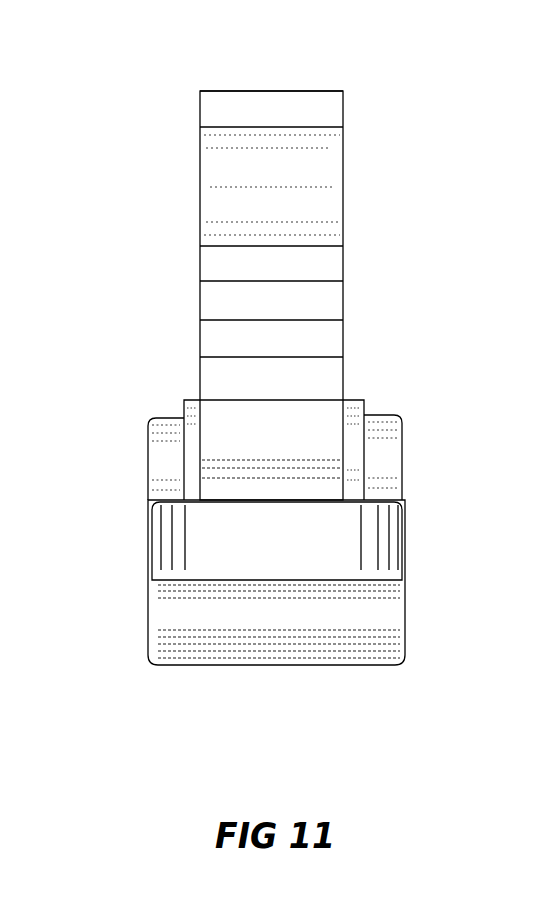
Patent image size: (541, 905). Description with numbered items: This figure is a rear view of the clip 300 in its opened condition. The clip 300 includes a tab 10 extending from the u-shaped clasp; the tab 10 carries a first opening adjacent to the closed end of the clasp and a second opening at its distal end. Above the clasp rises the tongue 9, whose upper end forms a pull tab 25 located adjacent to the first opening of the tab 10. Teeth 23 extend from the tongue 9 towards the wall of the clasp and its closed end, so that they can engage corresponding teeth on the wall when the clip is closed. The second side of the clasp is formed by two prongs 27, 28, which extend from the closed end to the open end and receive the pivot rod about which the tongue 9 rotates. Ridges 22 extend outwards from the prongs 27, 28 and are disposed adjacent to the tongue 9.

The clip 300 is at (174, 143).
The pull tab 25 is at (307, 88).
The tongue 9 is at (307, 173).
The teeth 23 is at (307, 303).
The ridges 22 is at (355, 398).
The prong 27 is at (383, 450).
The prong 28 is at (163, 450).
The tab 10 is at (328, 541).